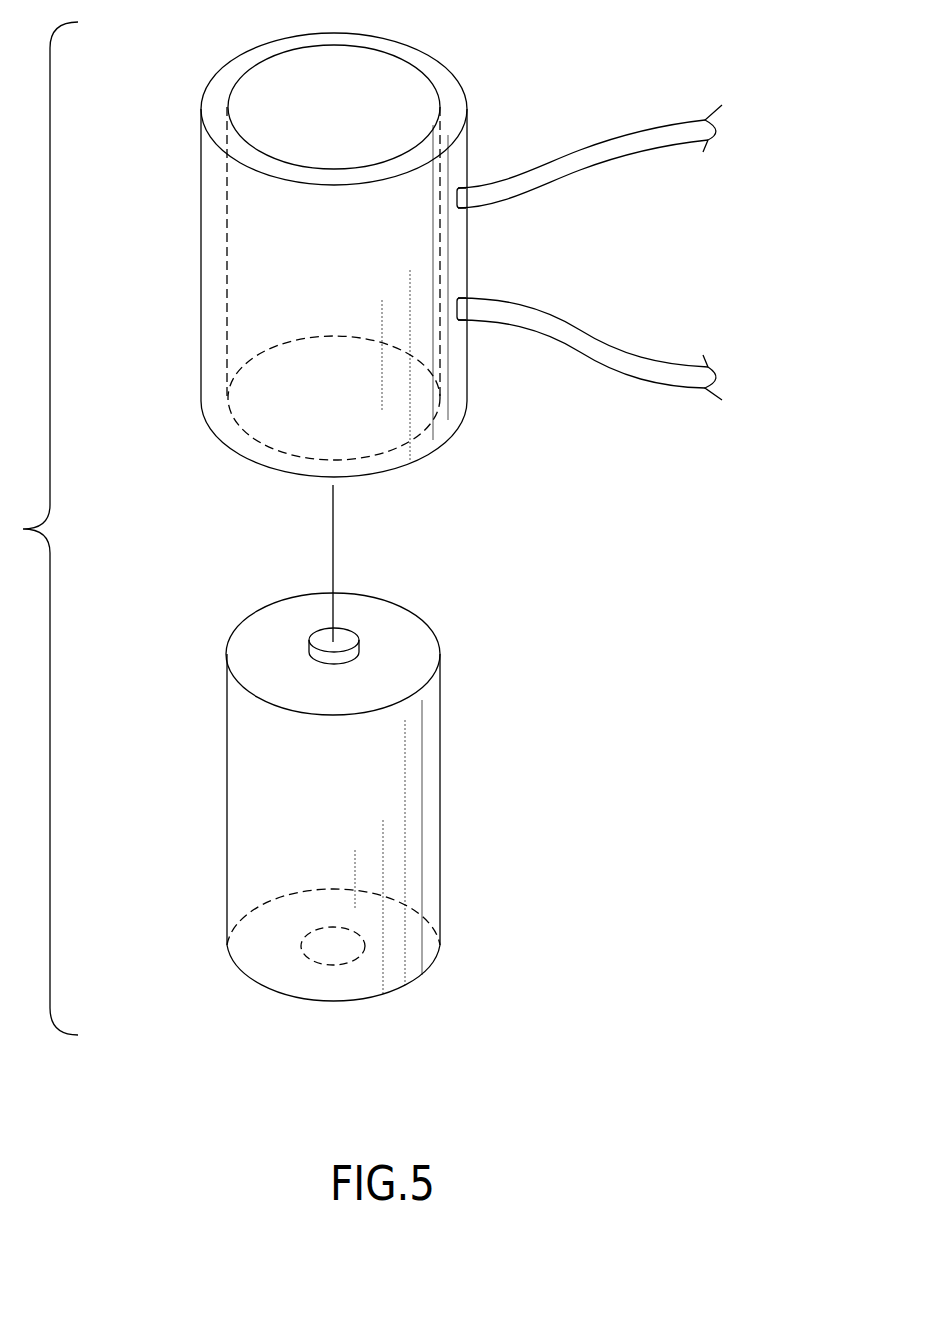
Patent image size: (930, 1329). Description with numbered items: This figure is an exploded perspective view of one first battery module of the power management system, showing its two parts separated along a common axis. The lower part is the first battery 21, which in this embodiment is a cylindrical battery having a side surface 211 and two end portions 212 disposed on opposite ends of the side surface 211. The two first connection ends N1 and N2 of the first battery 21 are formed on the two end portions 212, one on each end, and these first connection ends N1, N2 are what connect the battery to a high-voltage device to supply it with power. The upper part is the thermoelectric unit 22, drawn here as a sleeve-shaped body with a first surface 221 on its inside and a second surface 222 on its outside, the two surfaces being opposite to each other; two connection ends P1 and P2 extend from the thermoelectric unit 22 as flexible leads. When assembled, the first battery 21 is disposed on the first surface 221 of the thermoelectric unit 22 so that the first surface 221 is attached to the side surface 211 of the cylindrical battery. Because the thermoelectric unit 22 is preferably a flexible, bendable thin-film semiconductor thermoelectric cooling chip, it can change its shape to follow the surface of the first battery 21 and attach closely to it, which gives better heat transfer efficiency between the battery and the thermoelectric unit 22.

The thermoelectric unit 22 is at (415, 252).
The first surface 221 is at (245, 100).
The second surface 222 is at (206, 278).
The connection end P1 is at (597, 158).
The connection end P2 is at (588, 350).
The first battery 21 is at (331, 806).
The side surface 211 is at (228, 785).
The end portion 212 is at (255, 636).
The first connection end N1 is at (341, 952).
The first connection end N2 is at (345, 637).